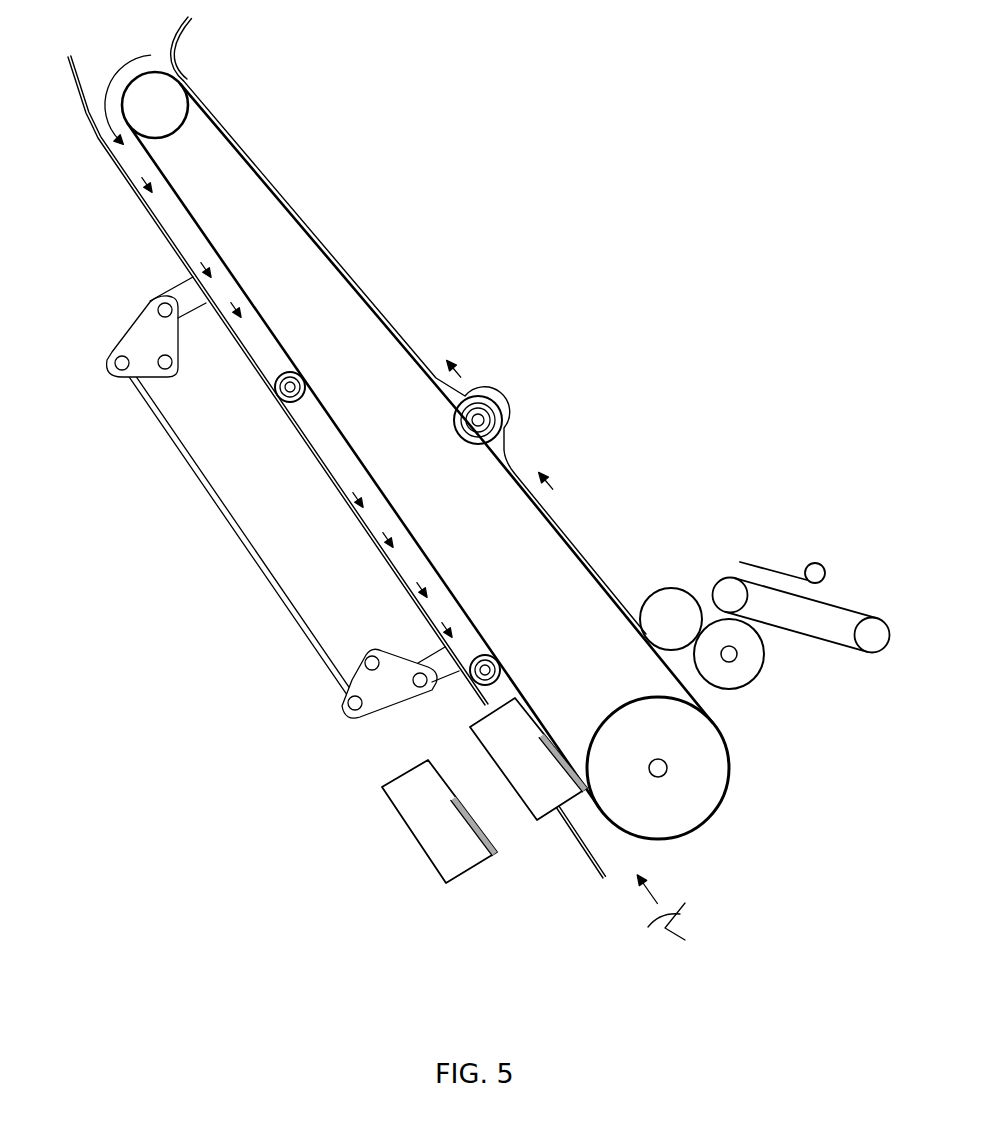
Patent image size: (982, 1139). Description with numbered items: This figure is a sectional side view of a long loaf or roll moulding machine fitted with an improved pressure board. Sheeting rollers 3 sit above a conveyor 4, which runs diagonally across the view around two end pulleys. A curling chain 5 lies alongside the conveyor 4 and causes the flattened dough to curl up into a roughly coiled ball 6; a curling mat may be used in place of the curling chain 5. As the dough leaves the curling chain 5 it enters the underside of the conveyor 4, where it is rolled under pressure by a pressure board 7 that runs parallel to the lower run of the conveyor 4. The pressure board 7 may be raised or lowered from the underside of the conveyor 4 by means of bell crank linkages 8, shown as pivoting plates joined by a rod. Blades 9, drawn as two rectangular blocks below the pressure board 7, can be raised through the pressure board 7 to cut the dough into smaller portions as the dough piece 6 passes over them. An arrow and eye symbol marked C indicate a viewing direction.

The sheeting rollers 3 is at (662, 610).
The conveyor 4 is at (315, 302).
The curling chain 5 is at (505, 457).
The coiled ball 6 is at (507, 413).
The pressure board 7 is at (133, 196).
The bell crank linkages 8 is at (140, 342).
The blades 9 is at (537, 810).
The viewing direction C is at (673, 925).